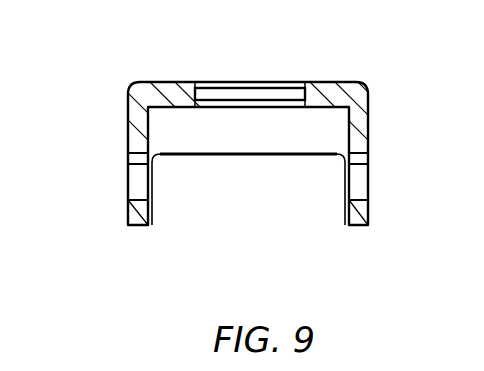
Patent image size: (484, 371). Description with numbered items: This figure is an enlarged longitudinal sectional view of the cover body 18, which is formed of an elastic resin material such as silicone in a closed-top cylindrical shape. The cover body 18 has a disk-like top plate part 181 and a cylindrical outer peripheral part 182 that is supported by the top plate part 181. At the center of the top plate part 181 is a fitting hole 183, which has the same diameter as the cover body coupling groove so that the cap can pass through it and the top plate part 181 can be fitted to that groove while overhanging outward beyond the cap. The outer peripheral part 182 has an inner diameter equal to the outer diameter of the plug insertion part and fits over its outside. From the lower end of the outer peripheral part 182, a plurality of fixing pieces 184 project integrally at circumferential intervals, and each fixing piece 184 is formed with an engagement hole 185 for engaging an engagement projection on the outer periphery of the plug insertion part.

The cover body 18 is at (251, 135).
The top plate part 181 is at (326, 82).
The outer peripheral part 182 is at (247, 152).
The fitting hole 183 is at (257, 82).
The fixing piece 184 is at (128, 212).
The engagement hole 185 is at (128, 186).